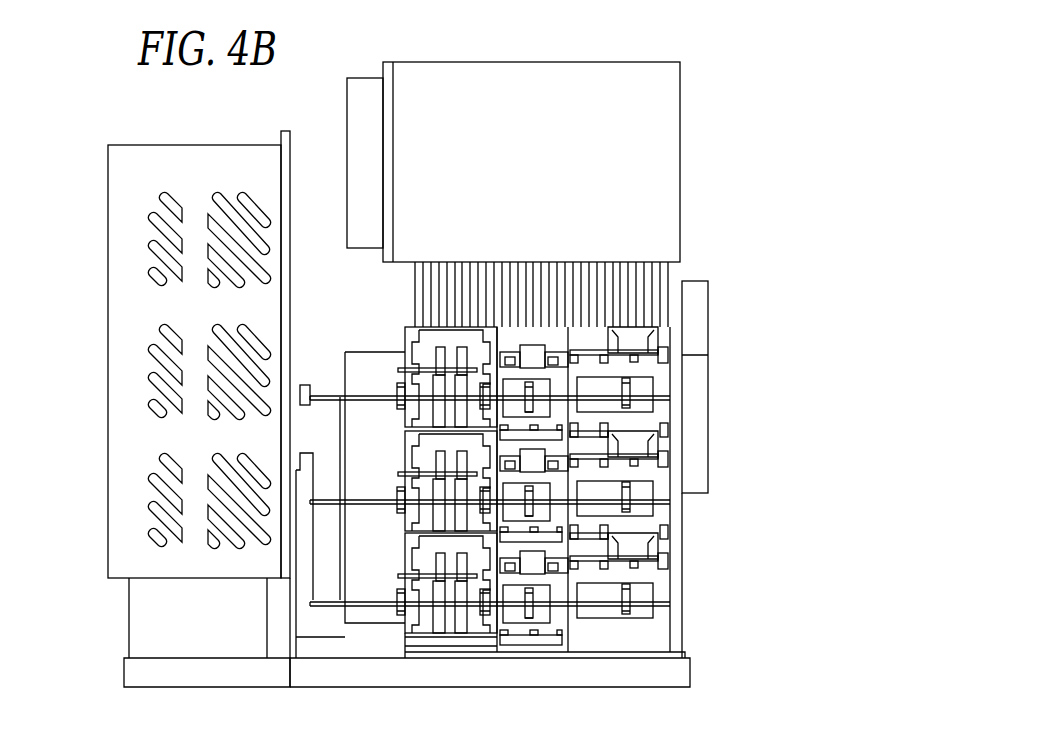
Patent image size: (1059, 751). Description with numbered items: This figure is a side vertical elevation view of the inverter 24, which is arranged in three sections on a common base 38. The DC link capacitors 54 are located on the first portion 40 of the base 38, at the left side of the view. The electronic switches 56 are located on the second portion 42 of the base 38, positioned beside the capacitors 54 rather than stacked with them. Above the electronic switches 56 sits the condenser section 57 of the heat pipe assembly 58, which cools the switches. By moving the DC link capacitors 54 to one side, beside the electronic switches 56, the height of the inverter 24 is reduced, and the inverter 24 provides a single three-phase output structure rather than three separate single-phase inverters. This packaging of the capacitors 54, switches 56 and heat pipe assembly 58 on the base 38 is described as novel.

The inverter 24 is at (94, 626).
The base 38 is at (669, 673).
The first portion of the base 40 is at (196, 688).
The second portion of the base 42 is at (470, 688).
The DC link capacitors 54 is at (104, 191).
The electronic switches 56 is at (664, 591).
The condenser section 57 is at (597, 62).
The heat pipe assembly 58 is at (692, 127).